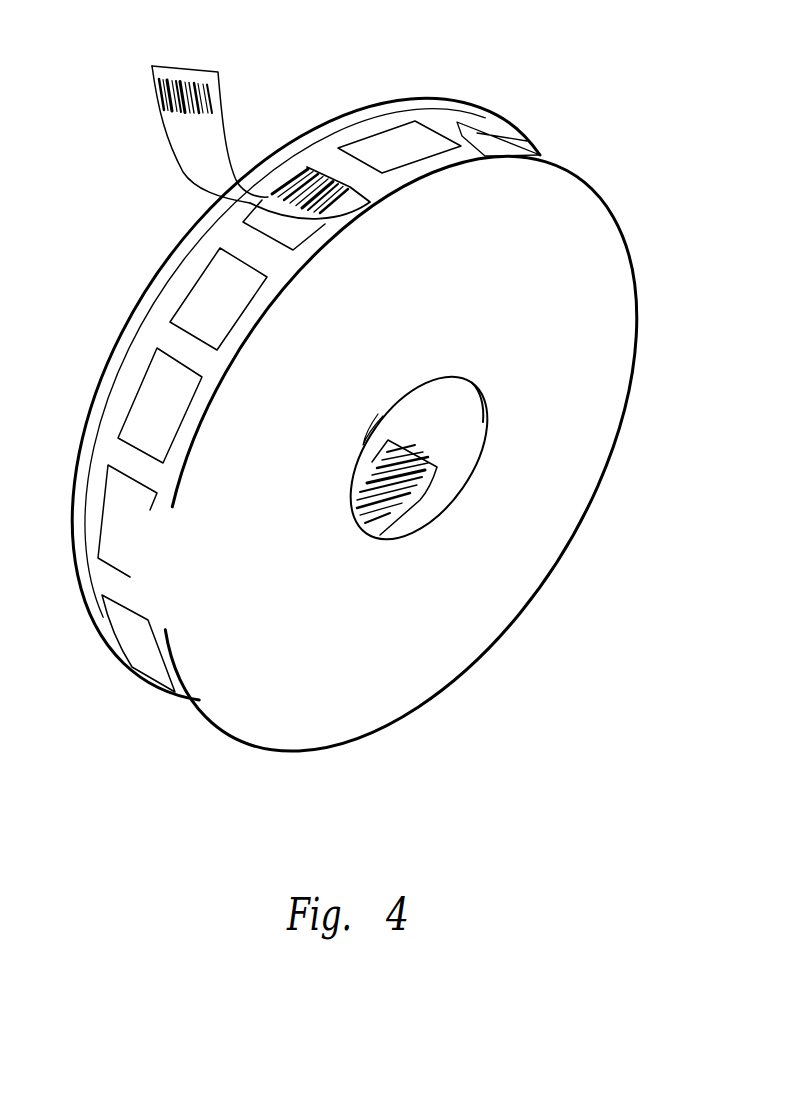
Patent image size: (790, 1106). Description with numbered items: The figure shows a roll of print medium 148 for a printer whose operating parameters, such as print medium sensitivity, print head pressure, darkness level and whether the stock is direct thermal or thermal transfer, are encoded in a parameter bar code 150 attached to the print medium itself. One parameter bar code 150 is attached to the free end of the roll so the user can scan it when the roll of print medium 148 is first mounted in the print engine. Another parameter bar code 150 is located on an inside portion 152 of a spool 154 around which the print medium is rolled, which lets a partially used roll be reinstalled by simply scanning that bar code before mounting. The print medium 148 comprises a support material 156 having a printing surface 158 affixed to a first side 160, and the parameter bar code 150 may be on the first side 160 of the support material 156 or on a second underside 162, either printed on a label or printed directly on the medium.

The roll of print medium 148 is at (542, 612).
The parameter bar code 150 is at (157, 100).
The inside portion 152 is at (440, 408).
The spool 154 is at (483, 421).
The support material 156 is at (417, 100).
The printing surface 158 is at (390, 143).
The first side 160 is at (332, 163).
The second underside 162 is at (193, 148).